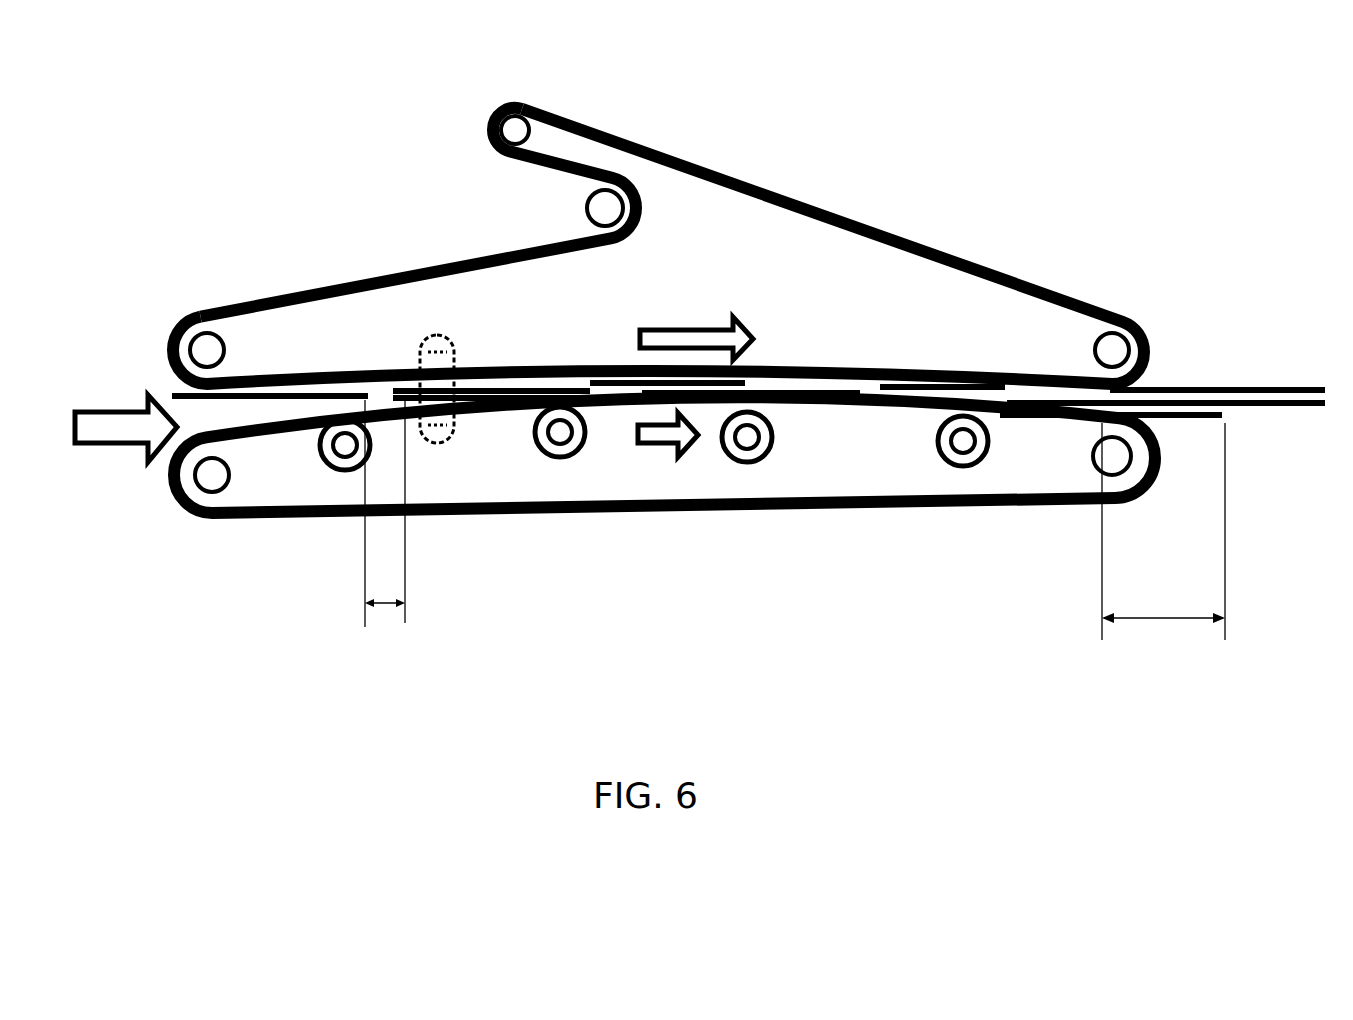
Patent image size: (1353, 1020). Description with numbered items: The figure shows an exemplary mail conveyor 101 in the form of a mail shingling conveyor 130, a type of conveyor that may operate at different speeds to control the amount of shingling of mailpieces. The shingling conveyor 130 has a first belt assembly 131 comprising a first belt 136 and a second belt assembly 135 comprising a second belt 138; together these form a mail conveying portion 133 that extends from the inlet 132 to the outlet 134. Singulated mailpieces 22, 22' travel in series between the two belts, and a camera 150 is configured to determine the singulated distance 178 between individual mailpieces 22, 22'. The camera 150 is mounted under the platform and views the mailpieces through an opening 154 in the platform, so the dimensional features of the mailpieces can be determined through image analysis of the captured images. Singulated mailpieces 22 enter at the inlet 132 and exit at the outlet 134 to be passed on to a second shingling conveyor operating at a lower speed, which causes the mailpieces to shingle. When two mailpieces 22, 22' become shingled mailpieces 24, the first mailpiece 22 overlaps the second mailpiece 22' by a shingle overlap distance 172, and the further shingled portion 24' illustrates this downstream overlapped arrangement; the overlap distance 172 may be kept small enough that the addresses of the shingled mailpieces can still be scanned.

The mail conveyor 101 is at (905, 172).
The mail shingling conveyor 130 is at (743, 169).
The first belt assembly 131 is at (455, 265).
The inlet 132 is at (148, 300).
The mail conveying portion 133 is at (775, 413).
The outlet 134 is at (1157, 380).
The second belt assembly 135 is at (530, 517).
The first belt 136 is at (355, 277).
The second belt 138 is at (268, 530).
The camera 150 is at (463, 367).
The opening 154 is at (442, 333).
The mailpiece 22 is at (270, 503).
The second mailpiece 22' is at (514, 502).
The shingled mailpieces 24 is at (797, 500).
The overlapped sheet portion 24' is at (1162, 502).
The shingle overlap distance 172 is at (1163, 541).
The singulated distance 178 is at (385, 526).